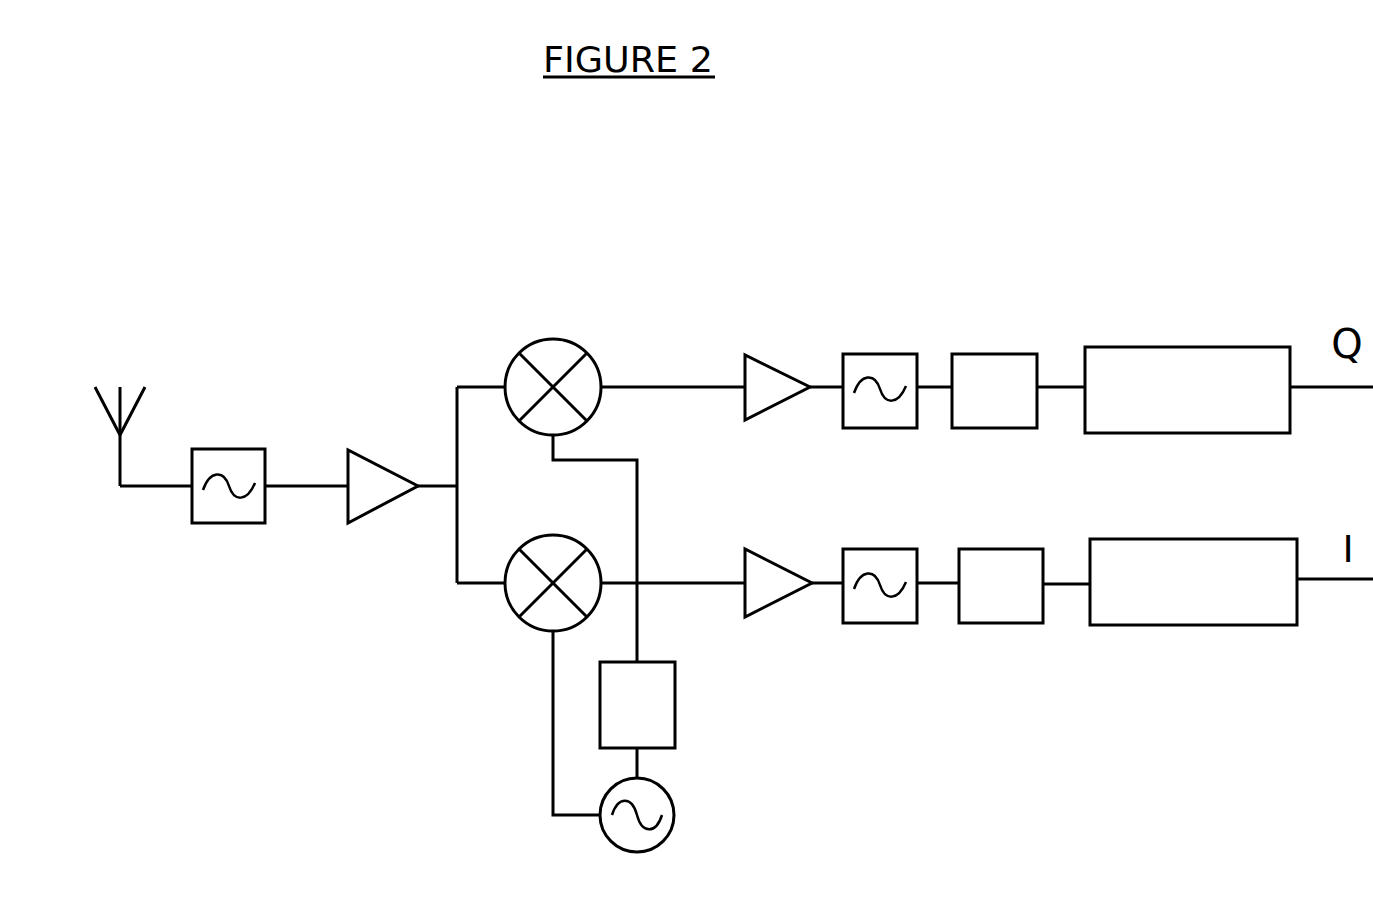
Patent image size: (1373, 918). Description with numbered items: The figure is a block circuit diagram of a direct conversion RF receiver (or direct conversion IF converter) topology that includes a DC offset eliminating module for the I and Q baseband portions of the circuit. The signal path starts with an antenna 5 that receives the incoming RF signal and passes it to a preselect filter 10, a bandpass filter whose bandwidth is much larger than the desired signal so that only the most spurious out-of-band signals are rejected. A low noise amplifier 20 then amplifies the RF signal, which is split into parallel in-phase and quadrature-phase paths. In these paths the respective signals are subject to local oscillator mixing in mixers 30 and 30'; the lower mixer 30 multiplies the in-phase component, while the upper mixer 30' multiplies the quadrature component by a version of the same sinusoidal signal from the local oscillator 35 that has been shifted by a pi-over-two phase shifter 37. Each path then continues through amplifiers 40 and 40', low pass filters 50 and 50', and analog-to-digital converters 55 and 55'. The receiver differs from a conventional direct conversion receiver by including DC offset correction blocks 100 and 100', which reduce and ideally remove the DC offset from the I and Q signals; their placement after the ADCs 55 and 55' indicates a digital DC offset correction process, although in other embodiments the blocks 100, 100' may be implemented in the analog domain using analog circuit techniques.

The antenna 5 is at (98, 430).
The preselect filter 10 is at (222, 438).
The low noise amplifier 20 is at (385, 523).
The mixer 30 is at (545, 562).
The mixer 30' is at (553, 357).
The local oscillator 35 is at (676, 818).
The pi/2 phase shifter 37 is at (712, 692).
The amplifier 40 is at (778, 557).
The amplifier 40' is at (781, 352).
The low pass filter 50 is at (880, 557).
The low pass filter 50' is at (885, 355).
The ADC 55 is at (1001, 557).
The ADC 55' is at (998, 355).
The DC offset correction block 100 is at (1193, 545).
The DC offset correction block 100' is at (1187, 351).